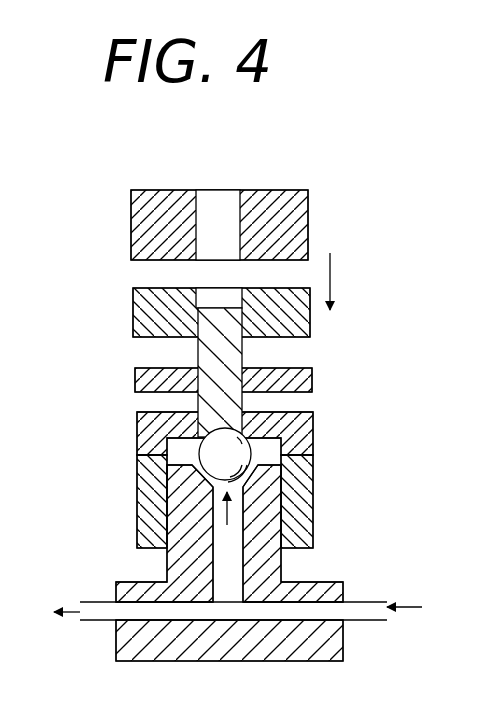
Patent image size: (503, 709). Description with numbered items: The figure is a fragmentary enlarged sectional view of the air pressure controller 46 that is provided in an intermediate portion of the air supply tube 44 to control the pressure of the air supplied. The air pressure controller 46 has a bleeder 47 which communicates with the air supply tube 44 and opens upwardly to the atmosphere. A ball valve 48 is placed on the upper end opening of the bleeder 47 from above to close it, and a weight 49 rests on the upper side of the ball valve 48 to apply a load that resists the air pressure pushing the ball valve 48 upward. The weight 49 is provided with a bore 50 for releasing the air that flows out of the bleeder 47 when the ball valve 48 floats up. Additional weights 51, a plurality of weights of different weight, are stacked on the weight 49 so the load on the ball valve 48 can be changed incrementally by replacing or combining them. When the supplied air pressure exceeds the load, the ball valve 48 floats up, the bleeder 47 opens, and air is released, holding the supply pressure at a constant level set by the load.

The air supply tube 44 is at (100, 607).
The air pressure controller 46 is at (343, 635).
The bleeder 47 is at (210, 488).
The ball valve 48 is at (233, 440).
The weight 49 is at (302, 481).
The bore 50 is at (150, 457).
The additional weights 51 is at (135, 377).